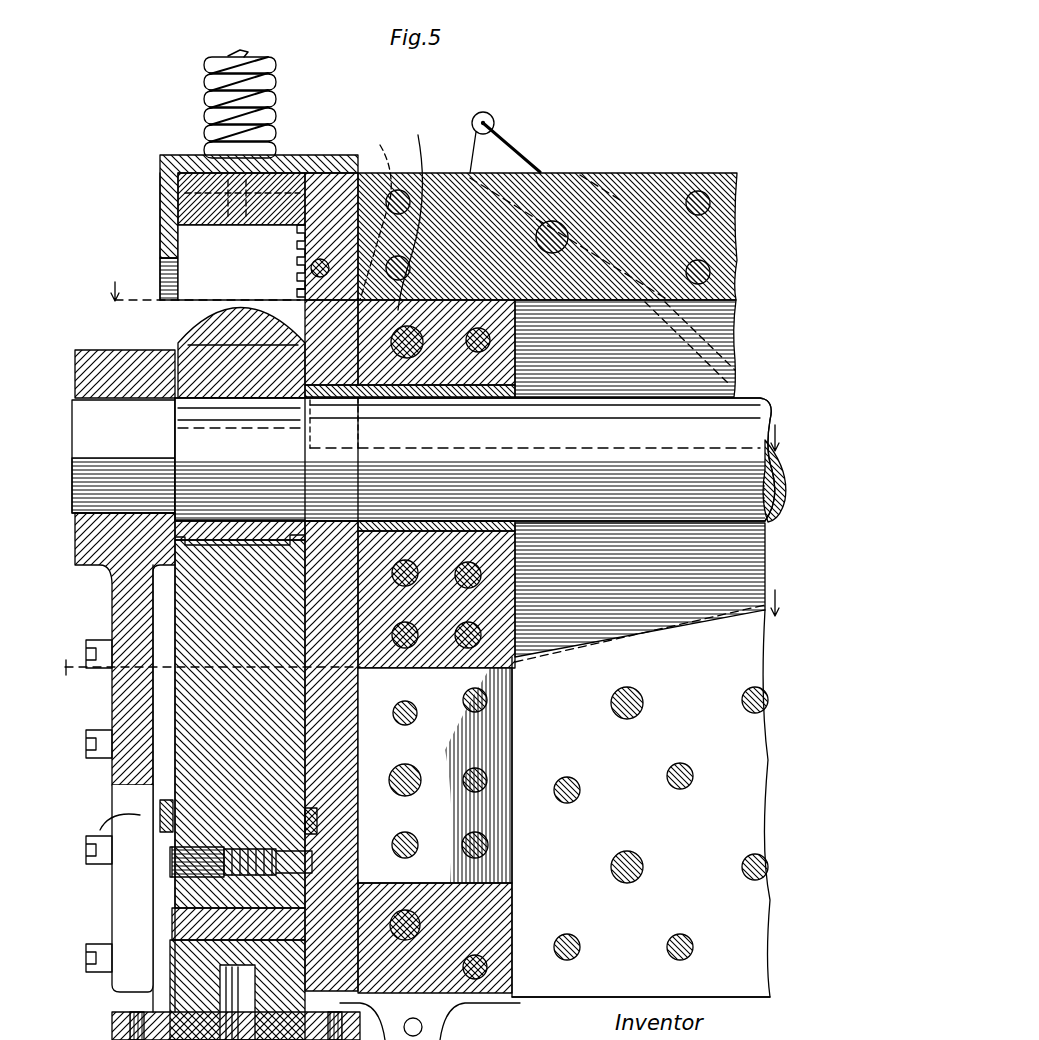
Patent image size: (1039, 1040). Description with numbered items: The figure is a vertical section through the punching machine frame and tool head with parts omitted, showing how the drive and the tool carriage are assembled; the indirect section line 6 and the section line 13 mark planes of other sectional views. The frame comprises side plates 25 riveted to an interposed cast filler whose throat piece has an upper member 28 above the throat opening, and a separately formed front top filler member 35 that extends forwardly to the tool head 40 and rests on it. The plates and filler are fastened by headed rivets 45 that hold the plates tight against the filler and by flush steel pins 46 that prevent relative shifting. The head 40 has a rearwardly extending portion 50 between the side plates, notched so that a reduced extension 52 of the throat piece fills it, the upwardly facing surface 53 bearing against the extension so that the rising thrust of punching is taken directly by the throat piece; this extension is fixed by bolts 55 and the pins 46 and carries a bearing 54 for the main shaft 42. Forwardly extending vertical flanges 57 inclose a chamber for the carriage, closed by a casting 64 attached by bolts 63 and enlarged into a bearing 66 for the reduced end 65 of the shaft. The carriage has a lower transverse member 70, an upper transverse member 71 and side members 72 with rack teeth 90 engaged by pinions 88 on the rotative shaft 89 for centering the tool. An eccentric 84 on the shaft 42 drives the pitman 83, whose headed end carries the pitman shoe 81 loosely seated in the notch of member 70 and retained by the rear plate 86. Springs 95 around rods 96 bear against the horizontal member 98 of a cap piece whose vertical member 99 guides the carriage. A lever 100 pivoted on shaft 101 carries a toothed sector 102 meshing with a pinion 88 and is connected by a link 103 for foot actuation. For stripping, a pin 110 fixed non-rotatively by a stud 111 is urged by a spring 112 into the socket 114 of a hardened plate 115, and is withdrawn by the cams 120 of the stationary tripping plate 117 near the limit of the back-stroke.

The section line 6— 6 is at (440, 373).
The section line 13— 13 is at (421, 632).
The side plates 25 is at (738, 350).
The upper member of throat piece 28 is at (640, 865).
The front top filler member 35 is at (630, 175).
The tool head 40 is at (322, 182).
The main shaft 42 is at (480, 460).
The rivets 45 is at (700, 190).
The steel pins 46 is at (553, 222).
The rearwardly extending portion of head 50 is at (363, 690).
The reduced extension of throat piece 52 is at (475, 775).
The upwardly facing surface 53 is at (422, 880).
The bearing 54 is at (515, 552).
The bolts 55 is at (415, 713).
The vertical flanges 57 is at (358, 745).
The bolts 63 is at (82, 945).
The casting 64 is at (90, 645).
The reduced end of main shaft 65 is at (76, 435).
The bearing 66 is at (75, 352).
The lower transverse member of tool carriage 70 is at (172, 972).
The upper transverse member of tool carriage 71 is at (192, 203).
The side members of tool carriage 72 is at (190, 266).
The pitman shoe 81 is at (185, 925).
The operating pitman 83 is at (190, 605).
The eccentric 84 is at (190, 357).
The rear plate 86 is at (345, 878).
The pinions 88 is at (297, 285).
The rotative shaft 89 is at (310, 268).
The rack teeth 90 is at (296, 240).
The spiral expansive springs 95 is at (278, 95).
The rods 96 is at (232, 56).
The horizontal member of cap piece 98 is at (186, 162).
The vertical member of cap piece 99 is at (165, 240).
The lever 100 is at (473, 118).
The horizontal shaft 101 is at (421, 214).
The toothed sector 102 is at (385, 145).
The link 103 is at (505, 142).
The pin 110 is at (170, 830).
The stud 111 is at (200, 850).
The spiral spring 112 is at (235, 872).
The socket 114 is at (185, 870).
The hardened plate 115 is at (112, 825).
The tripping plate 117 is at (340, 815).
The cams 120 is at (343, 850).